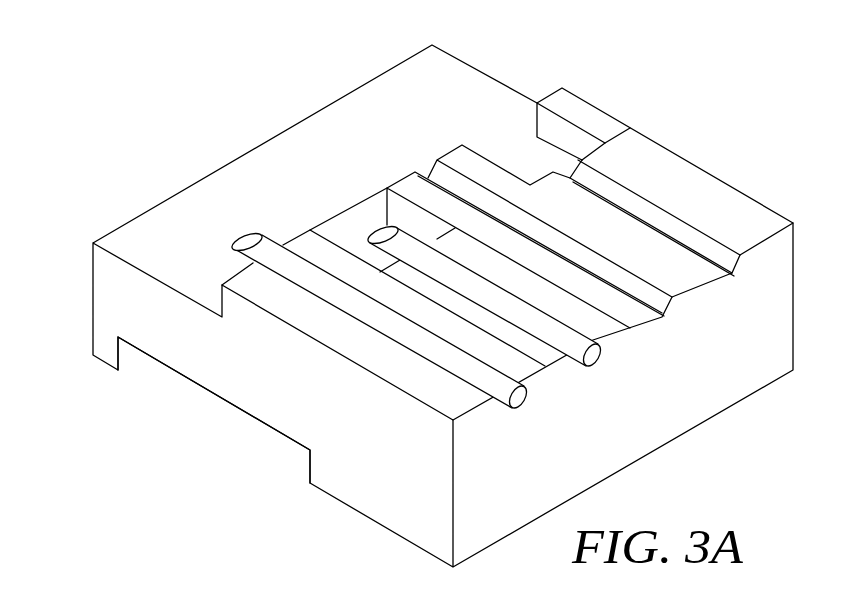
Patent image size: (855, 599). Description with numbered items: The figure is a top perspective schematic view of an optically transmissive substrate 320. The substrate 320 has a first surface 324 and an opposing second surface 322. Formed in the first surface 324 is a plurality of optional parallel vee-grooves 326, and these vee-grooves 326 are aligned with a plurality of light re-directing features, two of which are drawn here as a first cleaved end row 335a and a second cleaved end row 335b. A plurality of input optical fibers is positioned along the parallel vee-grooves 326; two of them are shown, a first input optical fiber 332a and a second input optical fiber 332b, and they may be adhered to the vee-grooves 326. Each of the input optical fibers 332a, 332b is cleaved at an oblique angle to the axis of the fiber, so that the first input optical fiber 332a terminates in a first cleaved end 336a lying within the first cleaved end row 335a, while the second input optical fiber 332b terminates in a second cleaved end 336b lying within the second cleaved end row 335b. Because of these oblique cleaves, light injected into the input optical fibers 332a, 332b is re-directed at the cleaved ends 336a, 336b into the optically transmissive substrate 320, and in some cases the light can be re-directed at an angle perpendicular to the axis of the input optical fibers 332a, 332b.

The optically transmissive substrate 320 is at (103, 269).
The second surface 322 is at (340, 497).
The first surface 324 is at (642, 148).
The parallel vee-grooves 326 is at (668, 207).
The first input optical fiber 332a is at (350, 302).
The second input optical fiber 332b is at (463, 285).
The first cleaved end row 335a is at (388, 132).
The second cleaved end row 335b is at (512, 142).
The first cleaved end 336a is at (247, 238).
The second cleaved end 336b is at (383, 230).